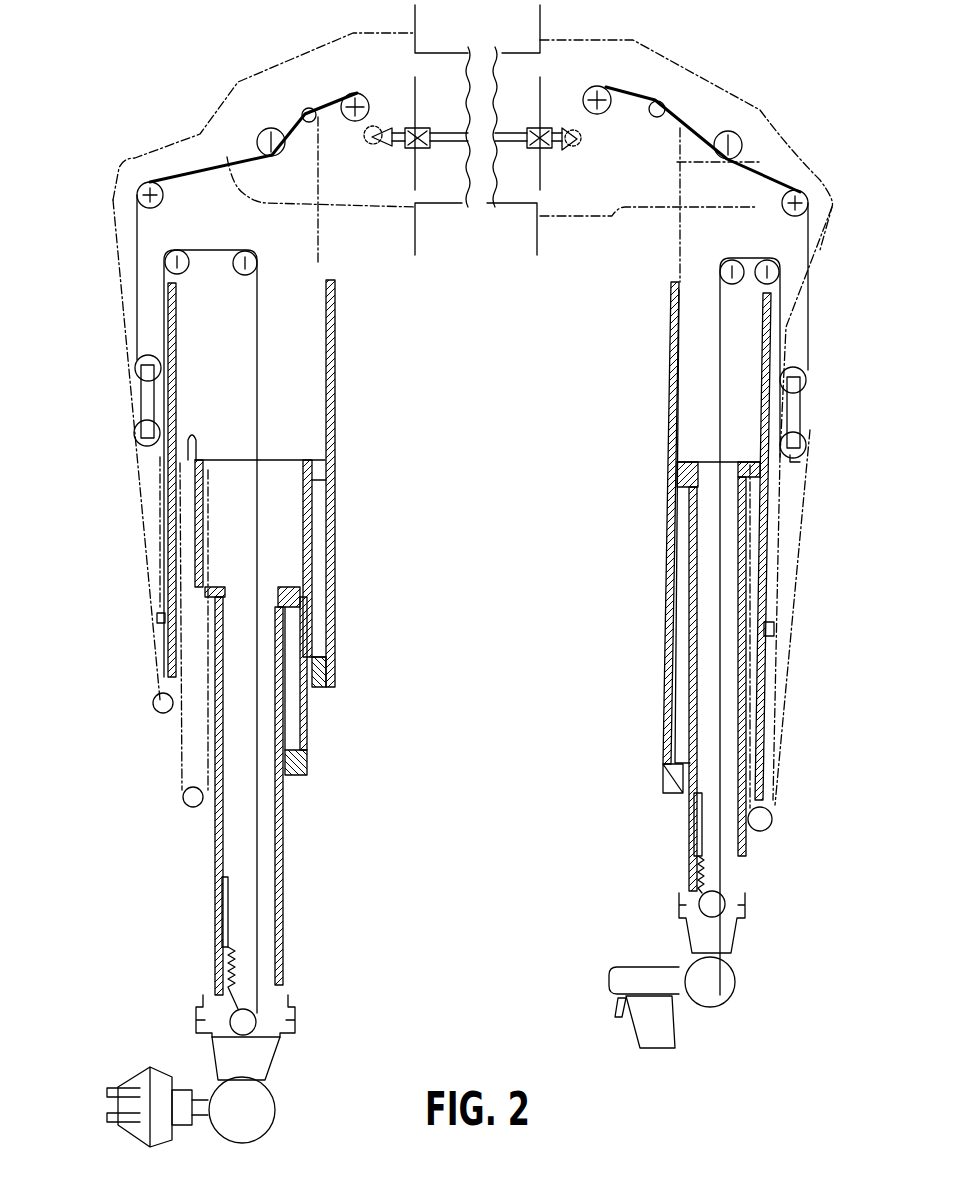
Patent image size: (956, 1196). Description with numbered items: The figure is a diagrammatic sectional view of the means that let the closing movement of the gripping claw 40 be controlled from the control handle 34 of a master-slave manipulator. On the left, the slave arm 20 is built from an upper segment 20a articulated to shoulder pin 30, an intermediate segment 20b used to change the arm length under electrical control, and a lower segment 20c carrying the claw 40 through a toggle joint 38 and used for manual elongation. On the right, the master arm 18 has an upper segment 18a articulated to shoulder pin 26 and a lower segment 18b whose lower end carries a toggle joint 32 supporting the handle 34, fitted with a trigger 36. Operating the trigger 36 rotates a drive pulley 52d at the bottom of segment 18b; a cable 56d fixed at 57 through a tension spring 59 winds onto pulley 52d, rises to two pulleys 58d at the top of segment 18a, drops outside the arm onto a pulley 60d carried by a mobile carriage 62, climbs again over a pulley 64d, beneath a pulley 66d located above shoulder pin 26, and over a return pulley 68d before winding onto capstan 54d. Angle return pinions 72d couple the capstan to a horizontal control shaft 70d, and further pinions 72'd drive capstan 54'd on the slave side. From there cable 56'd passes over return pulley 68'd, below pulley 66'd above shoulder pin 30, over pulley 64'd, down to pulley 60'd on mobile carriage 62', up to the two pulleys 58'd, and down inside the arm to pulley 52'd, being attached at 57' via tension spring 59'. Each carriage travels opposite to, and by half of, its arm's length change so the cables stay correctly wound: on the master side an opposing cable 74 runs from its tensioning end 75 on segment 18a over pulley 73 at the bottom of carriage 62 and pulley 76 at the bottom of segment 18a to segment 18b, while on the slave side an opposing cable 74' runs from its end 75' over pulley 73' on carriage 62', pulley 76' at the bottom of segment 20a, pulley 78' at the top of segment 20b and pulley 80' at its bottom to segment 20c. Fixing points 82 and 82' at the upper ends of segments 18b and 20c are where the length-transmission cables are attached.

The master arm 18 is at (645, 527).
The upper segment of master arm 18a is at (672, 336).
The lower segment of master arm 18b is at (690, 830).
The slave arm 20 is at (348, 527).
The upper segment of slave arm 20a is at (336, 314).
The intermediate segment of slave arm 20b is at (308, 762).
The lower segment of slave arm 20c is at (283, 868).
The shoulder pin 26 is at (727, 163).
The shoulder pin 30 is at (272, 157).
The toggle joint 32 is at (718, 984).
The control handle 34 is at (655, 1038).
The trigger 36 is at (617, 1008).
The toggle joint 38 is at (258, 1113).
The gripping claw 40 is at (168, 1058).
The drive pulley 52d is at (700, 907).
The pulley 52'd is at (199, 1021).
The capstan 54d is at (597, 86).
The capstan 54'd is at (354, 63).
The cable 56d is at (718, 393).
The cable 56'd is at (240, 631).
The fixing point of cable 56d 57 is at (661, 821).
The fixing point of cable 56'd 57' is at (189, 906).
The pulleys 58d is at (745, 287).
The pulleys 58'd is at (211, 278).
The tension spring 59 is at (745, 874).
The tension spring 59' is at (280, 962).
The pulley 60d is at (797, 368).
The pulley 60'd is at (184, 357).
The mobile carriage 62 is at (816, 417).
The mobile carriage 62' is at (176, 405).
The pulley 64d is at (783, 203).
The pulley 64'd is at (164, 229).
The pulley 66d is at (742, 138).
The pulley 66'd is at (244, 101).
The return pulley 68d is at (650, 116).
The return pulley 68'd is at (314, 93).
The control shaft 70d is at (443, 142).
The angle return pinions 72d is at (571, 150).
The angle return pinions 72'd is at (364, 159).
The pulley 73 is at (820, 469).
The pulley 73' is at (213, 439).
The opposing cable 74 is at (795, 507).
The opposing cable 74' is at (178, 495).
The cable end 75 is at (798, 617).
The cable end 75' is at (152, 700).
The pulley 76 is at (776, 832).
The pulley 76' is at (161, 725).
The pulley 78' is at (260, 539).
The pulley 80' is at (181, 819).
The fixing point of cable 56z 82 is at (718, 452).
The fixing point of cable 56'z 82' is at (252, 574).